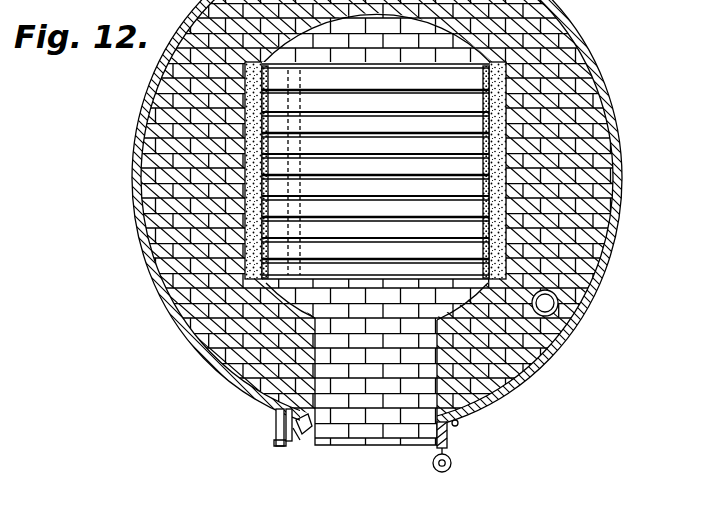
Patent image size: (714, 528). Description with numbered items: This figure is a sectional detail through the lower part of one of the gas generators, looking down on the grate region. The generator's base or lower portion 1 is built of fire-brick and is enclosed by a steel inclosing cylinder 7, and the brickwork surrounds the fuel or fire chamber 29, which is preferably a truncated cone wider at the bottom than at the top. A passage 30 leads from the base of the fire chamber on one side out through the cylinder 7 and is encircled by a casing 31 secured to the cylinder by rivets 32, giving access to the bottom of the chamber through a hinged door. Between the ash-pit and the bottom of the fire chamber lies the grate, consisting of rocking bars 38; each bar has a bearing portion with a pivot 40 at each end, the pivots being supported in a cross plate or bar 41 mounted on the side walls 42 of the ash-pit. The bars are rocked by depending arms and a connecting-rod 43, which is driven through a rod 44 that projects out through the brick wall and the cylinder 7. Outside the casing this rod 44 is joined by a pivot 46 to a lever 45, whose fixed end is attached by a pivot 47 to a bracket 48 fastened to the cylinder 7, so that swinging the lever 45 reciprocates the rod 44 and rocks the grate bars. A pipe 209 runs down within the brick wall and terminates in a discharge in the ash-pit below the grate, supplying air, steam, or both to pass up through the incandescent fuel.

The base or lower portion 1 is at (585, 168).
The inclosing or incasing cylinder 7 is at (617, 228).
The fuel or fire chamber 29 is at (192, 270).
The passage 30 is at (382, 378).
The casing 31 is at (448, 437).
The rivets 32 is at (459, 426).
The rocking bars 38 is at (375, 171).
The pivot 40 is at (486, 105).
The cross plate or bar 41 is at (483, 242).
The side walls of the ash-pit 42 is at (247, 153).
The connecting-rod 43 is at (300, 254).
The rod 44 is at (276, 418).
The lever 45 is at (286, 442).
The pivot 46 is at (274, 440).
The pivot 47 is at (305, 434).
The bracket 48 is at (293, 432).
The pipe 209 is at (558, 303).